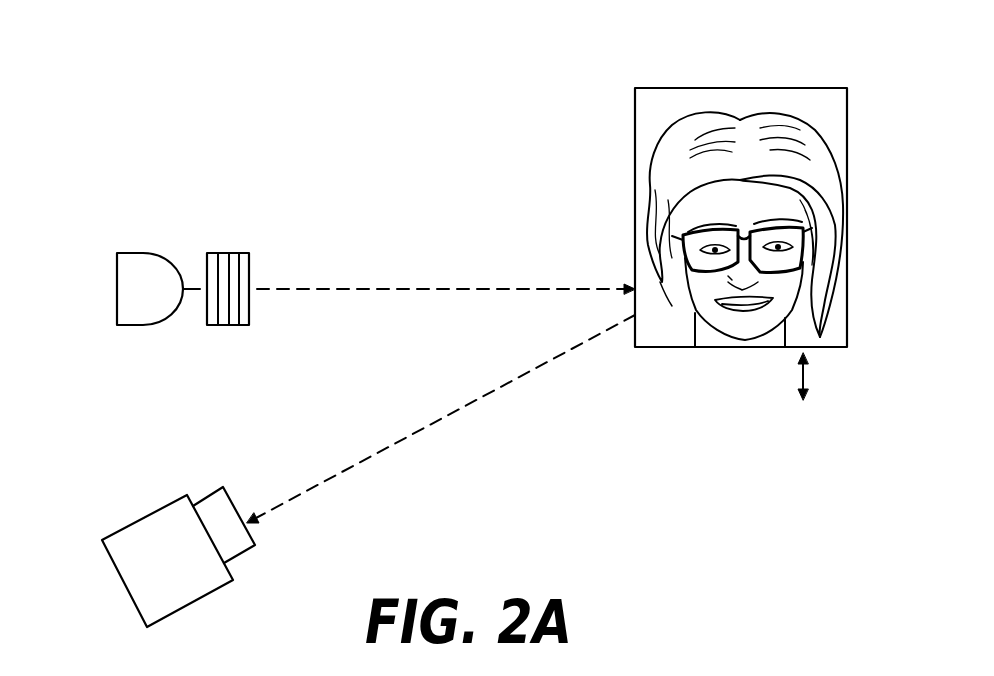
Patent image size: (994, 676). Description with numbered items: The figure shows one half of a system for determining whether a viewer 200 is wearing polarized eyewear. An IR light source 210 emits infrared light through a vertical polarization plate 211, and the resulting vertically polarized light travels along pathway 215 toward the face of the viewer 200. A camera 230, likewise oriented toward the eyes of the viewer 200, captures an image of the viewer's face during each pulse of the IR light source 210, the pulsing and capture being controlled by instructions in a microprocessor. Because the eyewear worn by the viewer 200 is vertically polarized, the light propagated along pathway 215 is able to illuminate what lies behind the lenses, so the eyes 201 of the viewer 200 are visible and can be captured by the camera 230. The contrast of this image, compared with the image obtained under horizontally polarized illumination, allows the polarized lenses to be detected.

The viewer 200 is at (777, 88).
The eyes 201 is at (847, 248).
The IR light source 210 is at (117, 268).
The vertical polarization plate 211 is at (238, 253).
The pathway 215 is at (340, 289).
The camera 230 is at (112, 567).